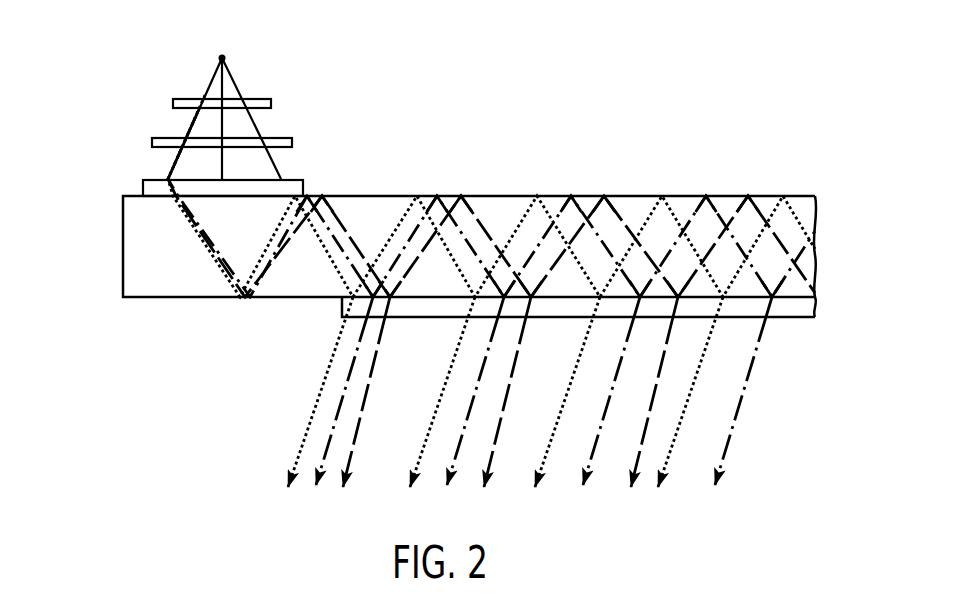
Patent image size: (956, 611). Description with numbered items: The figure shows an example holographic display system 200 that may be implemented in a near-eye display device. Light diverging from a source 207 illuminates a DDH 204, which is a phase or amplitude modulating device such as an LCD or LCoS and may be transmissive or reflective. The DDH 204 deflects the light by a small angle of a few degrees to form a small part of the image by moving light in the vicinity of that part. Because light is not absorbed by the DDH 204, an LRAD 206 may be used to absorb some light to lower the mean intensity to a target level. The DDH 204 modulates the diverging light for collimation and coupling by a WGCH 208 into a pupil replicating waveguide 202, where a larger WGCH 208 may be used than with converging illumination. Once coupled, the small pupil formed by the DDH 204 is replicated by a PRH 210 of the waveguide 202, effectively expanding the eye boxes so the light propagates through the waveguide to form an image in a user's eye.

The holographic display system 200 is at (766, 30).
The pupil replicating waveguide 202 is at (123, 242).
The DDH 204 is at (272, 99).
The LRAD 206 is at (293, 138).
The source 207 is at (224, 56).
The WGCH 208 is at (304, 181).
The PRH 210 is at (342, 305).